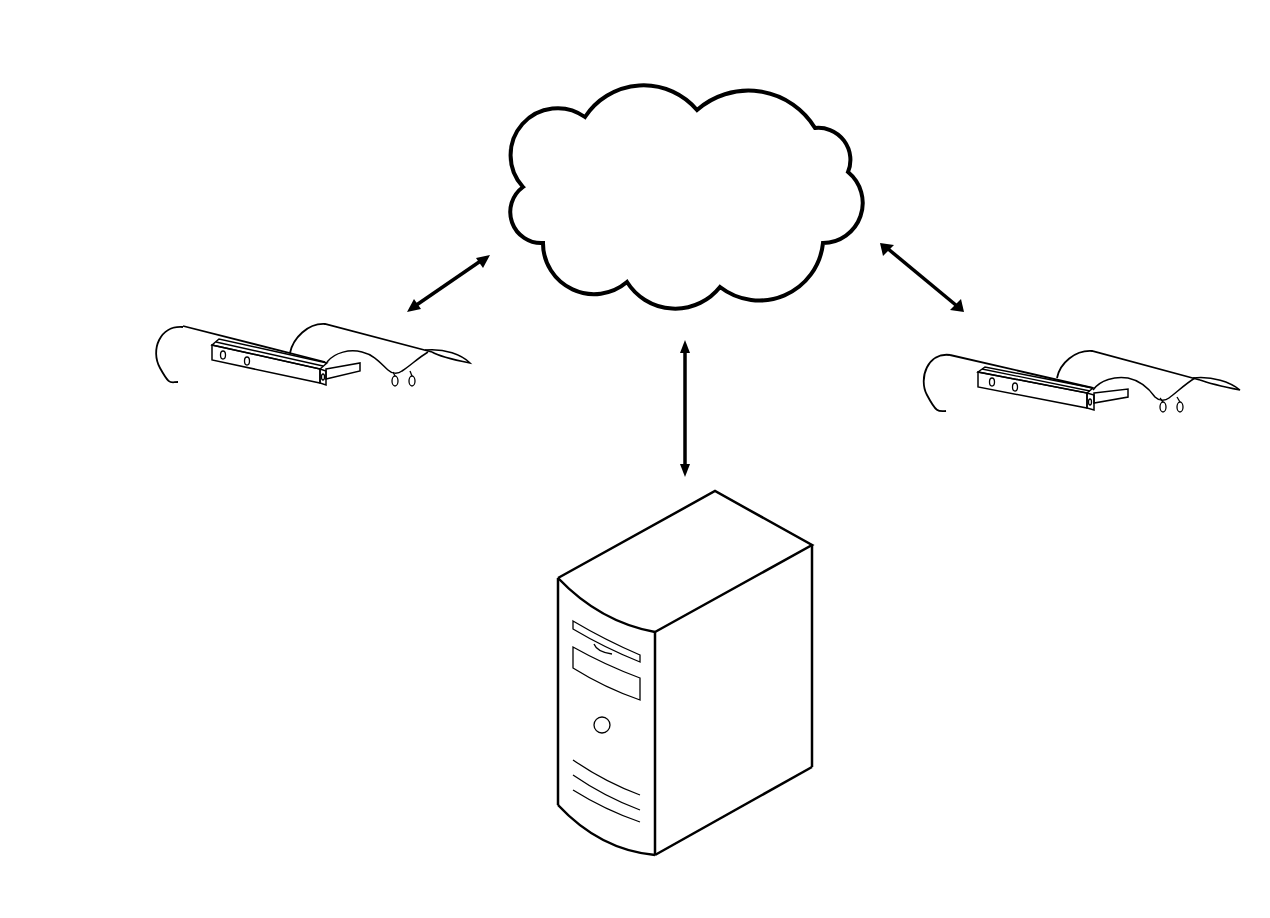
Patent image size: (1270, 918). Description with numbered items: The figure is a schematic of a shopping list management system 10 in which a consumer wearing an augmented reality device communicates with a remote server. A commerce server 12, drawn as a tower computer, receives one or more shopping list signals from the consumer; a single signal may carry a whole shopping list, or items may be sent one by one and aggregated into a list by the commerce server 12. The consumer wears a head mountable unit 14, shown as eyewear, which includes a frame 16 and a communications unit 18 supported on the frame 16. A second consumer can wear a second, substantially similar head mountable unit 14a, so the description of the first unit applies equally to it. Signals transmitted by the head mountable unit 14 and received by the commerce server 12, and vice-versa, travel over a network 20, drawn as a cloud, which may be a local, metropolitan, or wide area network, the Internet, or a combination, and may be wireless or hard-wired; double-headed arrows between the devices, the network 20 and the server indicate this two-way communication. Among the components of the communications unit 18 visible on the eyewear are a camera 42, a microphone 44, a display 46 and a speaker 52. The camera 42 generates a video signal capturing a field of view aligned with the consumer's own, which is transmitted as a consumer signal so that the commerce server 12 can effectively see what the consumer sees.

The shopping list management system 10 is at (697, 35).
The commerce server 12 is at (813, 617).
The head mountable unit 14 is at (240, 255).
The head mountable unit 14a is at (1100, 305).
The frame 16 is at (367, 333).
The communications unit 18 is at (218, 446).
The network 20 is at (848, 172).
The camera 42 is at (325, 386).
The microphone 44 is at (247, 380).
The display 46 is at (347, 380).
The speaker 52 is at (220, 362).